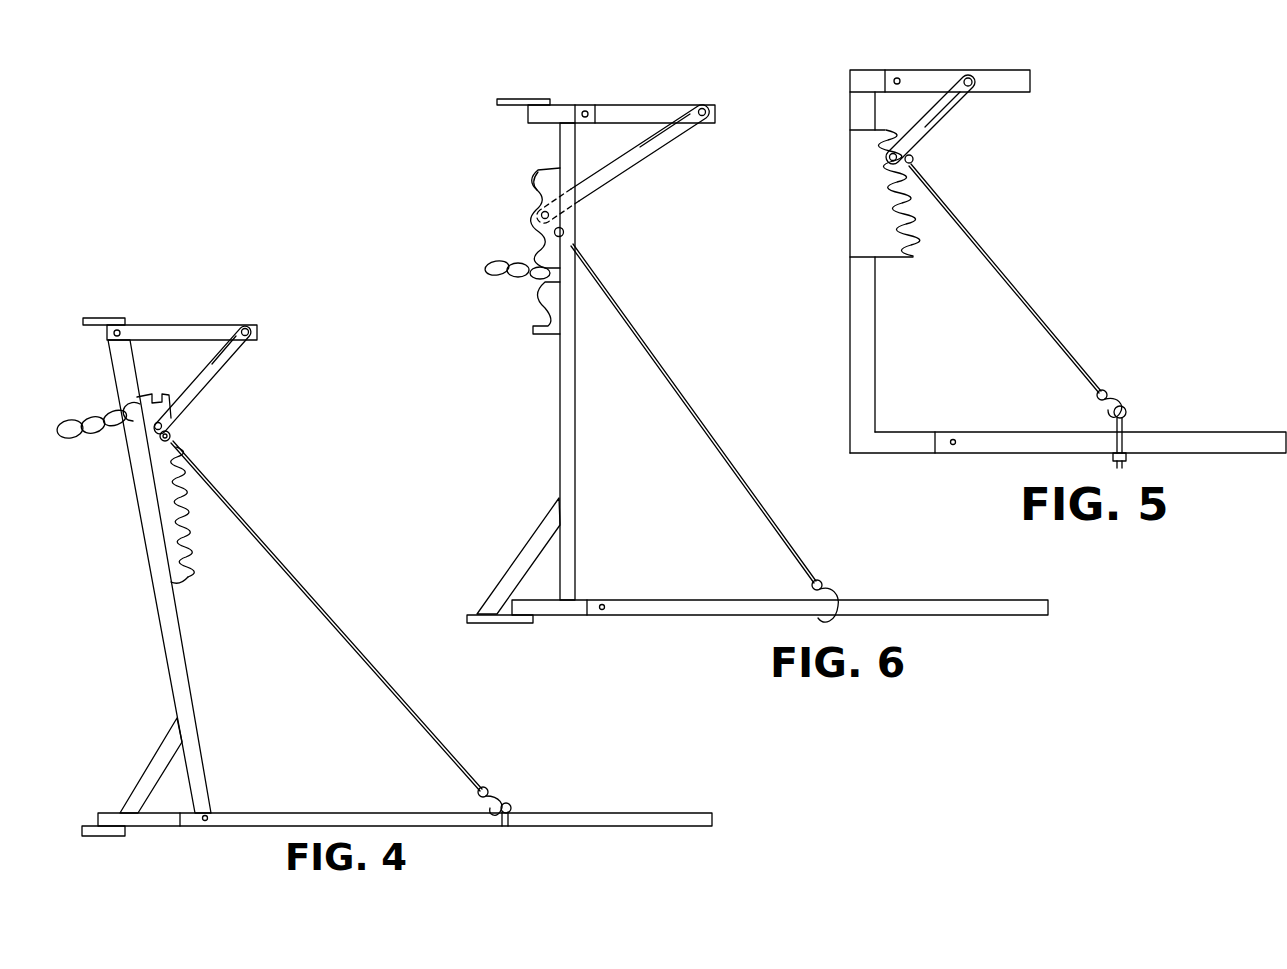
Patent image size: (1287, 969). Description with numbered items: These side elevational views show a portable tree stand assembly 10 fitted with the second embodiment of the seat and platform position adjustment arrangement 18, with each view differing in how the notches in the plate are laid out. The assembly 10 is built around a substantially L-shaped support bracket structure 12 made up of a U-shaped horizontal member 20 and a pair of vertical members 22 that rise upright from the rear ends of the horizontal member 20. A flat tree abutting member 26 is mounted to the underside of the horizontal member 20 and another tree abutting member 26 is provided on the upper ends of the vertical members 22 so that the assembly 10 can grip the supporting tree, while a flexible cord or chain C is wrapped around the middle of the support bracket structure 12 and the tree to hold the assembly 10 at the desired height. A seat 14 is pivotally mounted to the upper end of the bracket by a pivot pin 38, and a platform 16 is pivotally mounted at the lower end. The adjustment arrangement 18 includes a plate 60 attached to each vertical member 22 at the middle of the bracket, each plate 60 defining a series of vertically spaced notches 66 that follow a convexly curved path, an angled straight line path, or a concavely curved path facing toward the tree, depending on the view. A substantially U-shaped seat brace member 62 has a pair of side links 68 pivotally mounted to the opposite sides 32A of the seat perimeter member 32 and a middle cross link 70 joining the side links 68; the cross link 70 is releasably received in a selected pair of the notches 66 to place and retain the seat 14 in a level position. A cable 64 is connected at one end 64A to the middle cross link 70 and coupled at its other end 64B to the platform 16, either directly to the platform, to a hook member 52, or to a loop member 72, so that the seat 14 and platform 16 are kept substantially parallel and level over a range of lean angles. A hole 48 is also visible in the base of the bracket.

In FIG. 4, the portable tree stand assembly 10 is at (303, 490).
In FIG. 6, the portable tree stand assembly 10 is at (723, 73).
In FIG. 5, the portable tree stand assembly 10 is at (1112, 77).
In FIG. 4, the support bracket structure 12 is at (200, 645).
In FIG. 6, the support bracket structure 12 is at (587, 470).
In FIG. 5, the support bracket structure 12 is at (887, 355).
In FIG. 4, the seat 14 is at (195, 299).
In FIG. 6, the seat 14 is at (647, 102).
In FIG. 5, the seat 14 is at (992, 72).
In FIG. 4, the platform 16 is at (344, 806).
In FIG. 6, the platform 16 is at (963, 592).
In FIG. 5, the platform 16 is at (1242, 425).
In FIG. 4, the seat and platform position adjustment arrangement 18 is at (373, 612).
In FIG. 6, the seat and platform position adjustment arrangement 18 is at (722, 422).
In FIG. 5, the seat and platform position adjustment arrangement 18 is at (1057, 311).
In FIG. 4, the horizontal member 20 is at (145, 828).
In FIG. 6, the horizontal member 20 is at (557, 617).
In FIG. 5, the horizontal member 20 is at (918, 455).
In FIG. 4, the vertical members 22 is at (168, 640).
In FIG. 6, the vertical members 22 is at (559, 418).
In FIG. 5, the vertical members 22 is at (850, 318).
In FIG. 4, the tree abutting member 26 is at (90, 326).
In FIG. 6, the tree abutting member 26 is at (510, 97).
In FIG. 4, the seat perimeter member 32 is at (150, 325).
In FIG. 6, the seat perimeter member 32 is at (668, 104).
In FIG. 5, the seat perimeter member 32 is at (955, 70).
In FIG. 4, the opposite sides of seat perimeter member 32A is at (248, 326).
In FIG. 6, the opposite sides of seat perimeter member 32A is at (675, 116).
In FIG. 5, the opposite sides of seat perimeter member 32A is at (1005, 92).
In FIG. 4, the pivot pin 38 is at (113, 327).
In FIG. 6, the pivot pin 38 is at (584, 108).
In FIG. 5, the pivot pin 38 is at (900, 78).
In FIG. 4, the base hole 48 is at (208, 815).
In FIG. 6, the base hole 48 is at (606, 604).
In FIG. 5, the base hole 48 is at (956, 439).
In FIG. 5, the hook member 52 is at (1132, 409).
In FIG. 4, the plate 60 is at (162, 538).
In FIG. 6, the plate 60 is at (555, 322).
In FIG. 5, the plate 60 is at (875, 215).
In FIG. 4, the seat brace member 62 is at (235, 368).
In FIG. 6, the seat brace member 62 is at (650, 164).
In FIG. 5, the seat brace member 62 is at (973, 103).
In FIG. 4, the cable 64 is at (326, 607).
In FIG. 6, the cable 64 is at (715, 432).
In FIG. 5, the cable 64 is at (1037, 302).
In FIG. 4, the one end of cable 64A is at (180, 432).
In FIG. 6, the one end of cable 64A is at (564, 231).
In FIG. 5, the one end of cable 64A is at (918, 158).
In FIG. 4, the other end of cable 64B is at (489, 786).
In FIG. 6, the other end of cable 64B is at (830, 584).
In FIG. 5, the other end of cable 64B is at (1112, 398).
In FIG. 4, the notches 66 is at (200, 530).
In FIG. 6, the notches 66 is at (536, 178).
In FIG. 5, the notches 66 is at (925, 197).
In FIG. 4, the side links 68 is at (192, 380).
In FIG. 6, the side links 68 is at (605, 170).
In FIG. 5, the side links 68 is at (940, 126).
In FIG. 4, the middle cross link 70 is at (152, 438).
In FIG. 6, the middle cross link 70 is at (540, 214).
In FIG. 5, the middle cross link 70 is at (885, 160).
In FIG. 4, the loop member 72 is at (512, 804).
In FIG. 4, the chain C is at (80, 445).
In FIG. 6, the chain C is at (502, 276).